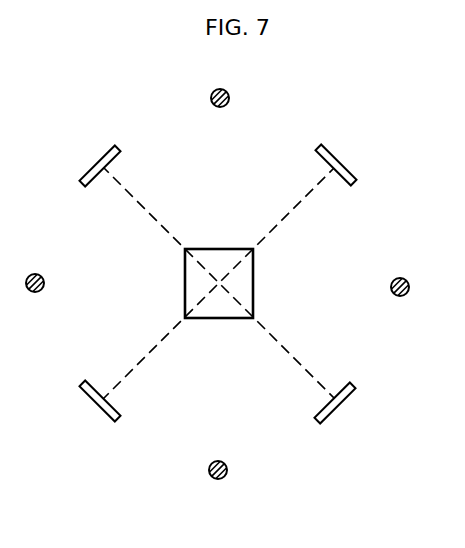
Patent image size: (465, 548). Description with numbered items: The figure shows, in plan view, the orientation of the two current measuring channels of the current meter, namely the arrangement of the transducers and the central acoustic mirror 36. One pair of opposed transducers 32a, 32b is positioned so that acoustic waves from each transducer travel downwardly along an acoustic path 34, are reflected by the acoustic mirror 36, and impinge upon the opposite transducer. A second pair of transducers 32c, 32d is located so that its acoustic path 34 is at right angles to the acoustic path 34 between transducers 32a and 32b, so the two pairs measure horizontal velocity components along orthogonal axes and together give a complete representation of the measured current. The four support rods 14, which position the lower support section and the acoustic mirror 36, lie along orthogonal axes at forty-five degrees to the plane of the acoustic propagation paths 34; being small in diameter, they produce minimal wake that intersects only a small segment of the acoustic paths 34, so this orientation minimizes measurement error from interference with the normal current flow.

The support rods 14 is at (211, 93).
The transducer 32a is at (108, 153).
The transducer 32b is at (329, 414).
The transducer 32c is at (108, 415).
The transducer 32d is at (334, 154).
The acoustic path 34 is at (151, 207).
The acoustic mirror 36 is at (243, 283).